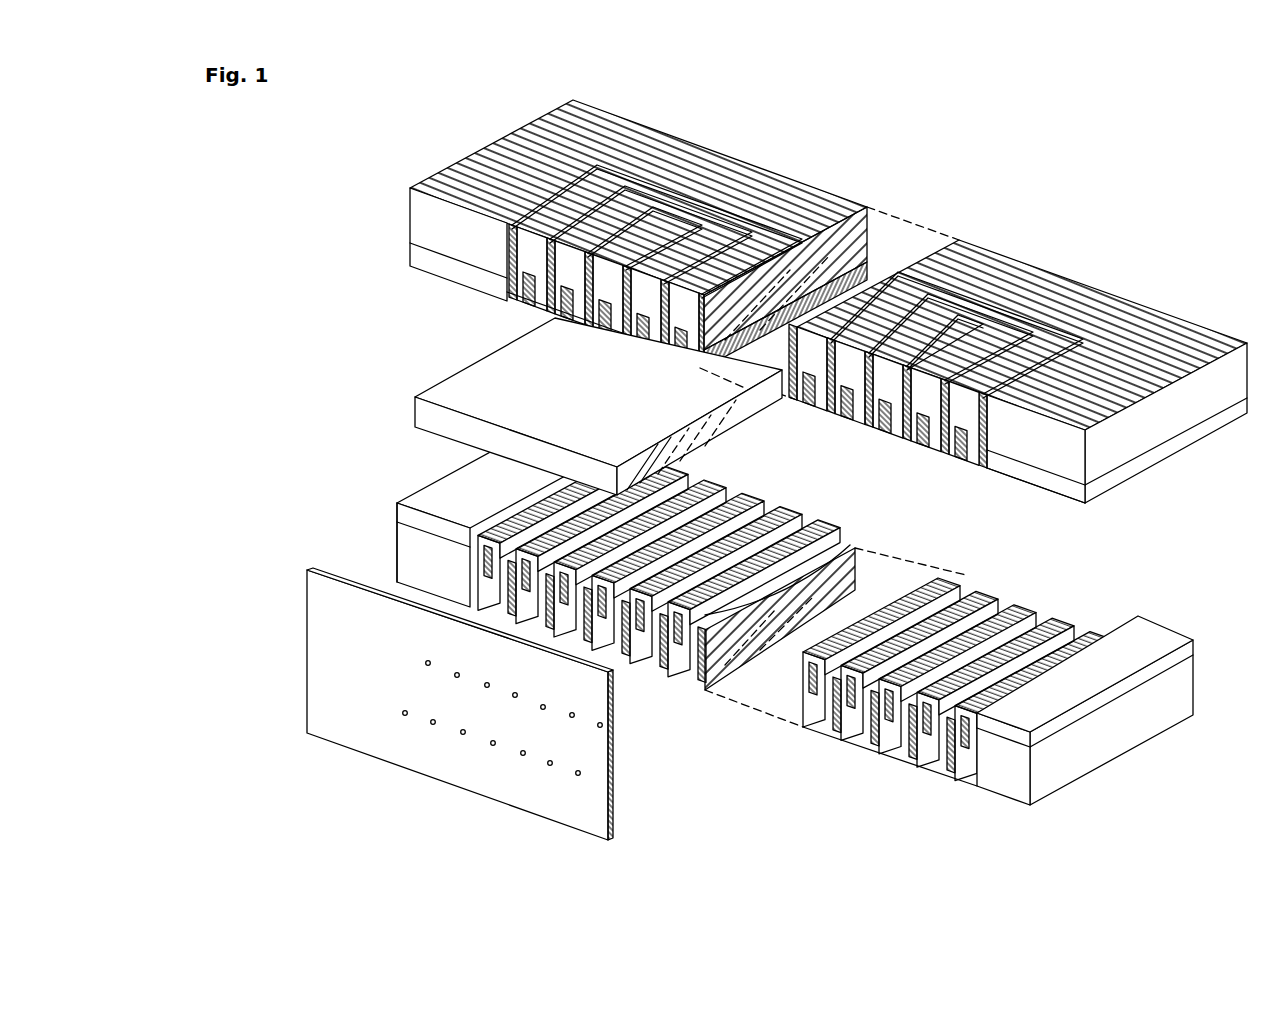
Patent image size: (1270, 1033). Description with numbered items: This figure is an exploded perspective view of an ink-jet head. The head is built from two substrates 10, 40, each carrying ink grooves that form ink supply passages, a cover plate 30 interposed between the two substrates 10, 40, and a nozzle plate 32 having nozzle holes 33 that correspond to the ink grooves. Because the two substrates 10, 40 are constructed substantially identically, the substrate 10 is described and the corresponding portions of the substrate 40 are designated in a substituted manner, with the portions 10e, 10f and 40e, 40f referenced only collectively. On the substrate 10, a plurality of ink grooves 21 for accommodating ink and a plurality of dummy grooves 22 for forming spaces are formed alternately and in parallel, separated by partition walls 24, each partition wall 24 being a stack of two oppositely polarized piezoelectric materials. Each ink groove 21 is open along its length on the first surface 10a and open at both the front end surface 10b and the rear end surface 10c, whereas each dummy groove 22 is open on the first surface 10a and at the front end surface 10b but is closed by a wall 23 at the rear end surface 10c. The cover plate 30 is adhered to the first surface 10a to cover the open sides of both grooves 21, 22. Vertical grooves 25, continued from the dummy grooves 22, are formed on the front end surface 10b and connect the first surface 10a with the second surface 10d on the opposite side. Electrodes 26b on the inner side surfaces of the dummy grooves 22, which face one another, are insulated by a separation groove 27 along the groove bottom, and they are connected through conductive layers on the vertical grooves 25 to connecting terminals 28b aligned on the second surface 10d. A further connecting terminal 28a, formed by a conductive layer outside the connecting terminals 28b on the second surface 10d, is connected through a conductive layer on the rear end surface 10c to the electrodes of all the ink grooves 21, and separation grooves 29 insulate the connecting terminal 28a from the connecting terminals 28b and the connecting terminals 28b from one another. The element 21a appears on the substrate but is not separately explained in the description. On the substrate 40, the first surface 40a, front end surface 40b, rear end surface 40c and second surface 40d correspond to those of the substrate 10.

The substrate 10 is at (1024, 684).
The first surface 10a is at (460, 500).
The front end surface 10b is at (408, 545).
The rear end surface 10c is at (1195, 675).
The second surface 10d is at (765, 660).
The portion of substrate 10e is at (400, 503).
The portion of substrate 10f is at (1115, 743).
The ink groove 21 is at (565, 313).
The flat ledge 21a is at (1130, 620).
The dummy groove 22 is at (537, 510).
The wall 23 is at (873, 555).
The partition wall 24 is at (713, 493).
The vertical groove 25 is at (622, 333).
The electrode 26b is at (663, 623).
The separation groove 27 is at (693, 640).
The connecting terminal 28a is at (620, 148).
The connecting terminal 28b is at (870, 298).
The separation groove 29 is at (748, 213).
The cover plate 30 is at (497, 367).
The nozzle plate 32 is at (595, 808).
The nozzle hole 33 is at (515, 695).
The substrate 40 is at (1022, 384).
The first surface 40a is at (1087, 503).
The front end surface 40b is at (1060, 463).
The rear end surface 40c is at (843, 197).
The second surface 40d is at (1013, 283).
The portion of substrate 40e is at (515, 133).
The portion of substrate 40f is at (1120, 447).